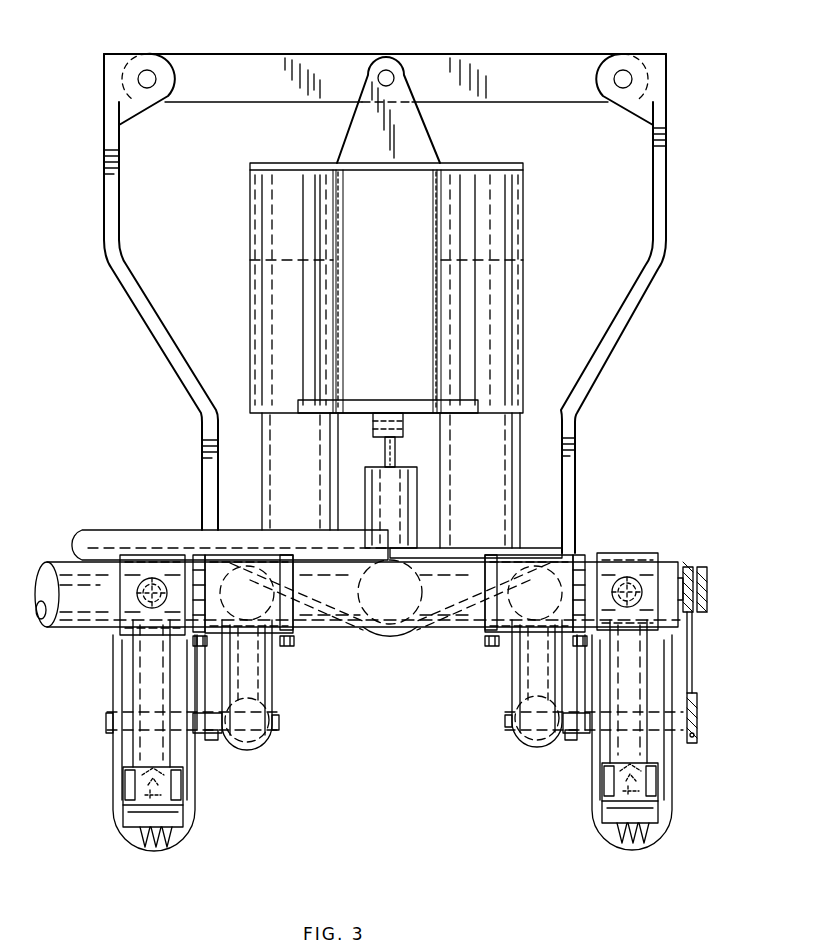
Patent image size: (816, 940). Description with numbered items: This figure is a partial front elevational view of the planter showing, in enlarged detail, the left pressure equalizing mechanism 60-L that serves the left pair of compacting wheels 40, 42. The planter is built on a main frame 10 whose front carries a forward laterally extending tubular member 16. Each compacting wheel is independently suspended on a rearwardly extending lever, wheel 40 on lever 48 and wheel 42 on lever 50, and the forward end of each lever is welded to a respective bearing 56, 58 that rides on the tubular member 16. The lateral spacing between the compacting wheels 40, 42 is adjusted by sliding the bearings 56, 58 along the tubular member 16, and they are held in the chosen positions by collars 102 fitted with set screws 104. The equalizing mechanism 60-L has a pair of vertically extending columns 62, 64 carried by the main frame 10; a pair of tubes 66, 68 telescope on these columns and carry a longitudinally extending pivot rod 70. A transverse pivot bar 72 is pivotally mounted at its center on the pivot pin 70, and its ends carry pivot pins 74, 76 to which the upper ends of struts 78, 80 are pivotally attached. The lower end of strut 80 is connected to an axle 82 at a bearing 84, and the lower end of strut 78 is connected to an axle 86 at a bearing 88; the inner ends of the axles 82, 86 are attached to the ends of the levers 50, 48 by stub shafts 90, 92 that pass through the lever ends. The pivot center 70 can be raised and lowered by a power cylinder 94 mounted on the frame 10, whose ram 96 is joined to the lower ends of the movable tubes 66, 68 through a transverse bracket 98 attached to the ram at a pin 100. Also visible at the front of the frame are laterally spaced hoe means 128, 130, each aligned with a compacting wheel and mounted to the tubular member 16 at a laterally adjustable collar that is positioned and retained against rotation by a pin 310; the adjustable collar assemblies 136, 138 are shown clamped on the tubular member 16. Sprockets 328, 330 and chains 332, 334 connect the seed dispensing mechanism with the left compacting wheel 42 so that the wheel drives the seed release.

The main frame 10 is at (58, 560).
The forward laterally extending tubular member 16 is at (76, 628).
The compacting wheel 40 is at (196, 826).
The compacting wheel 42 is at (593, 816).
The rearwardly extending lever 48 is at (274, 696).
The rearwardly extending lever 50 is at (512, 680).
The bearing 56 is at (224, 554).
The bearing 58 is at (519, 554).
The left pressure equalizing mechanism 60-L is at (407, 279).
The vertically extending column 62 is at (262, 480).
The vertically extending column 64 is at (520, 490).
The tube 66 is at (251, 250).
The tube 68 is at (524, 222).
The pivot rod 70 is at (389, 70).
The transverse pivot bar 72 is at (226, 54).
The pivot pin 74 is at (149, 71).
The pivot pin 76 is at (625, 71).
The strut 78 is at (120, 222).
The strut 80 is at (667, 230).
The axle 82 is at (677, 740).
The bearing 84 is at (570, 741).
The axle 86 is at (108, 731).
The bearing 88 is at (212, 741).
The stub shaft 90 is at (505, 722).
The stub shaft 92 is at (280, 728).
The power cylinder 94 is at (418, 505).
The ram 96 is at (385, 455).
The transverse bracket 98 is at (368, 400).
The pin 100 is at (400, 432).
The collar 102 is at (197, 554).
The set screw 104 is at (289, 647).
The hoe means 128 is at (130, 681).
The hoe means 130 is at (656, 680).
The clamp 136 is at (135, 554).
The clamp 138 is at (631, 553).
The pin 310 is at (152, 578).
The sprocket 328 is at (705, 574).
The sprocket 330 is at (698, 712).
The chain 332 is at (693, 638).
The chain 334 is at (708, 588).